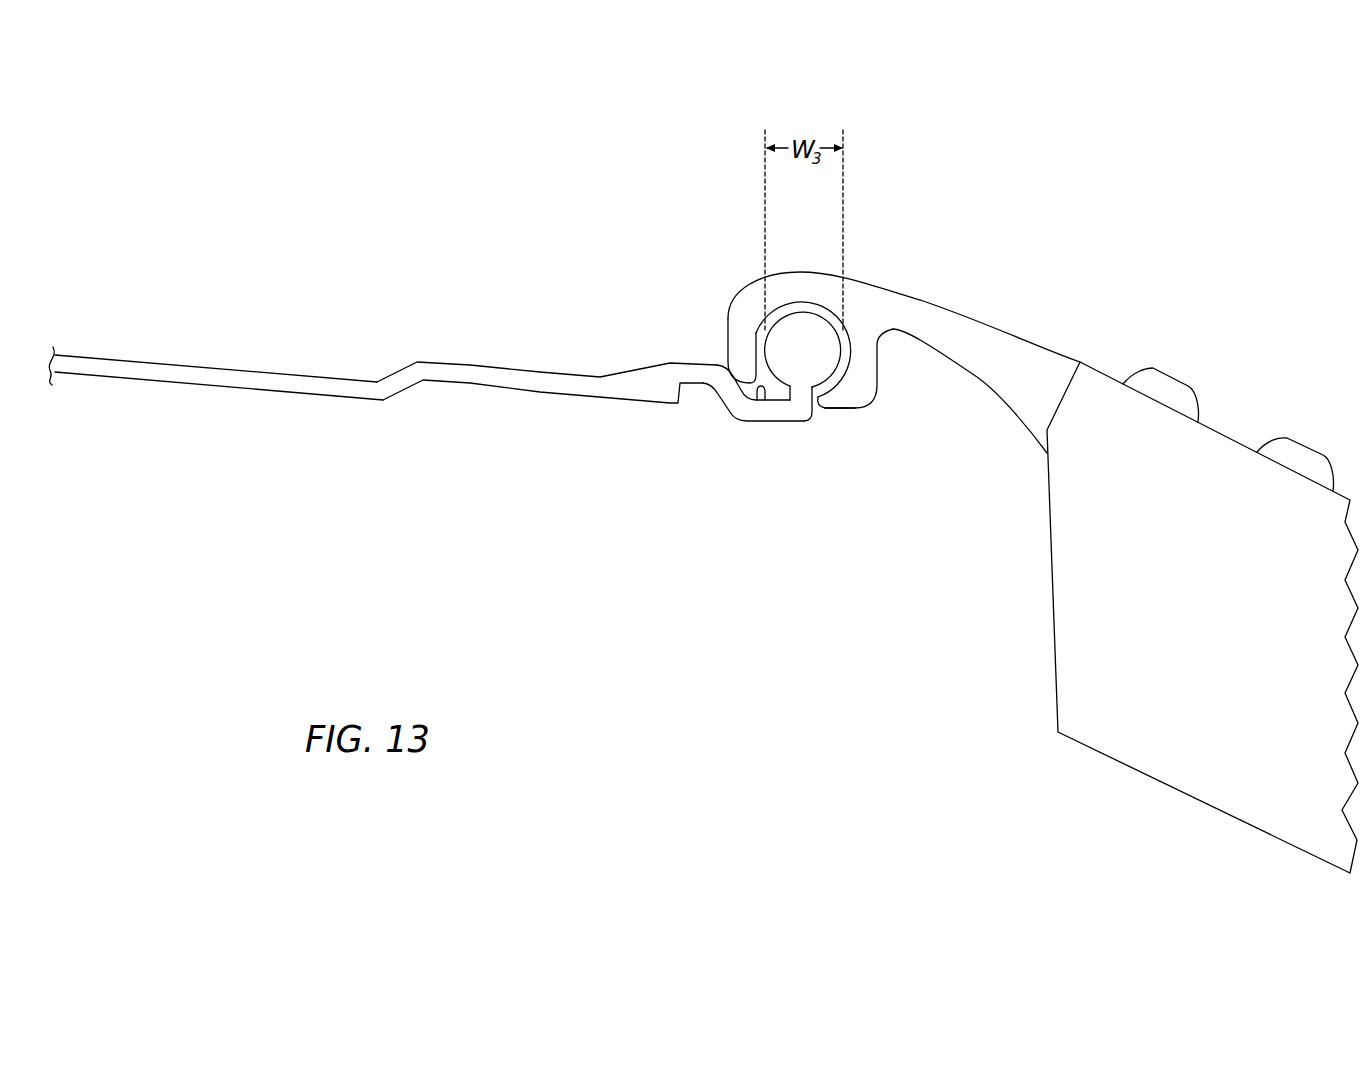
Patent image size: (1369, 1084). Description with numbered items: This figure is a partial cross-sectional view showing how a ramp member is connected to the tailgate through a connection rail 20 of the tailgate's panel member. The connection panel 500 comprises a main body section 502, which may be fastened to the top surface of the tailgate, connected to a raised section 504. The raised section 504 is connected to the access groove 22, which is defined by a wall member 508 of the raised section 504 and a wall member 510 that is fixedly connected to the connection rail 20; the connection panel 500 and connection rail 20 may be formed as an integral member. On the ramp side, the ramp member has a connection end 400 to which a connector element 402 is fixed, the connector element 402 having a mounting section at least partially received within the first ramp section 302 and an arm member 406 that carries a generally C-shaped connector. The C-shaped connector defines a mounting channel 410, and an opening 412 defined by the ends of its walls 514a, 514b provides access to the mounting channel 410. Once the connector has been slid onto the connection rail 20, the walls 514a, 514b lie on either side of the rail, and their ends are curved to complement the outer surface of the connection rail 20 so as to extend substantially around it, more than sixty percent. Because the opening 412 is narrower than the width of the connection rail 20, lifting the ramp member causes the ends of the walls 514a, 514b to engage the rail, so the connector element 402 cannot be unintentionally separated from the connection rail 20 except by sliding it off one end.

The connection panel 500 is at (491, 386).
The main body section 502 is at (250, 370).
The raised section 504 is at (500, 366).
The wall member 508 is at (722, 393).
The wall member 510 is at (800, 399).
The access groove 22 is at (762, 392).
The connection rail 20 is at (805, 348).
The connection end 400 is at (1009, 508).
The connector element 402 is at (805, 334).
The mounting channel 410 is at (795, 307).
The opening 412 is at (823, 418).
The wall 514a is at (742, 335).
The wall 514b is at (847, 387).
The arm member 406 is at (953, 330).
The first ramp section 302 is at (1206, 598).